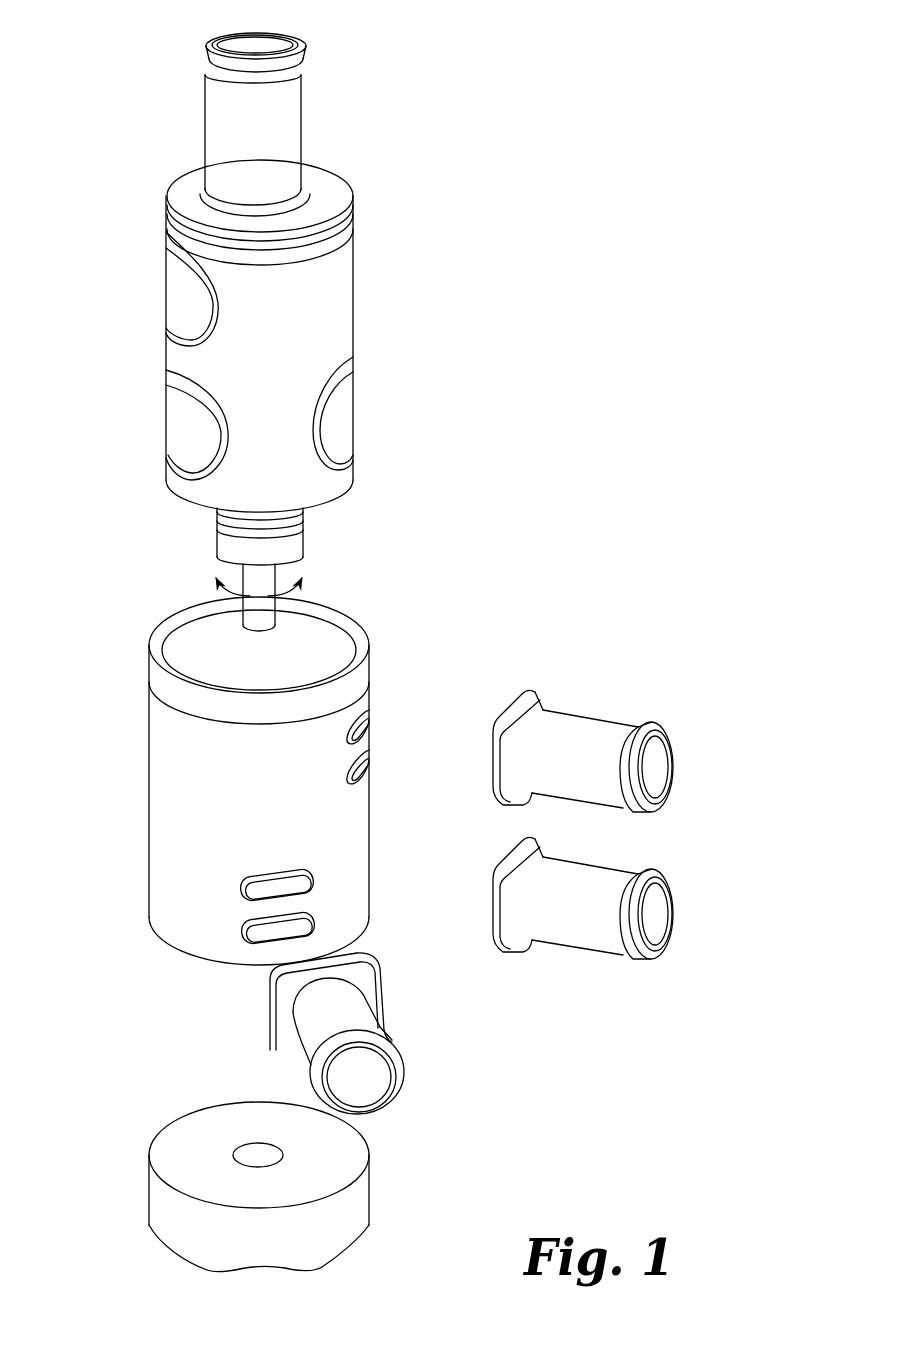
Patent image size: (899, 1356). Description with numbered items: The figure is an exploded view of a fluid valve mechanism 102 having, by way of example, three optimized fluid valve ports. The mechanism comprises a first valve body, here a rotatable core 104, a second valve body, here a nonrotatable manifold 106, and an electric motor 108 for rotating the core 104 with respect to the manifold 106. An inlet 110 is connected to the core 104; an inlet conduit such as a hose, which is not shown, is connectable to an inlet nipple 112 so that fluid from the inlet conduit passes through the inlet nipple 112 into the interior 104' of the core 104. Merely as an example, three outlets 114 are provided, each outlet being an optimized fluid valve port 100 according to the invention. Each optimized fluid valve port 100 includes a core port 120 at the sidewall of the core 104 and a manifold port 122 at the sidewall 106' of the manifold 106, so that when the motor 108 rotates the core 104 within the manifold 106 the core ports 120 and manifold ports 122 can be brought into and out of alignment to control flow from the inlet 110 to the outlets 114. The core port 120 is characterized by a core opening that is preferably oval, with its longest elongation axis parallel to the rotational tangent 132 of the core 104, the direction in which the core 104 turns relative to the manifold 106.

The fluid valve mechanism 102 is at (502, 332).
The core 104 is at (239, 336).
The interior of the core 104' is at (197, 485).
The manifold 106 is at (242, 769).
The sidewall of the manifold 106' is at (195, 874).
The electric motor 108 is at (388, 1207).
The inlet 110 is at (332, 97).
The inlet nipple 112 is at (208, 118).
The optimized fluid valve port 100 is at (380, 651).
The outlets 114 is at (155, 272).
The core port 120 is at (152, 302).
The manifold port 122 is at (228, 910).
The rotational tangent of the core 132 is at (250, 615).